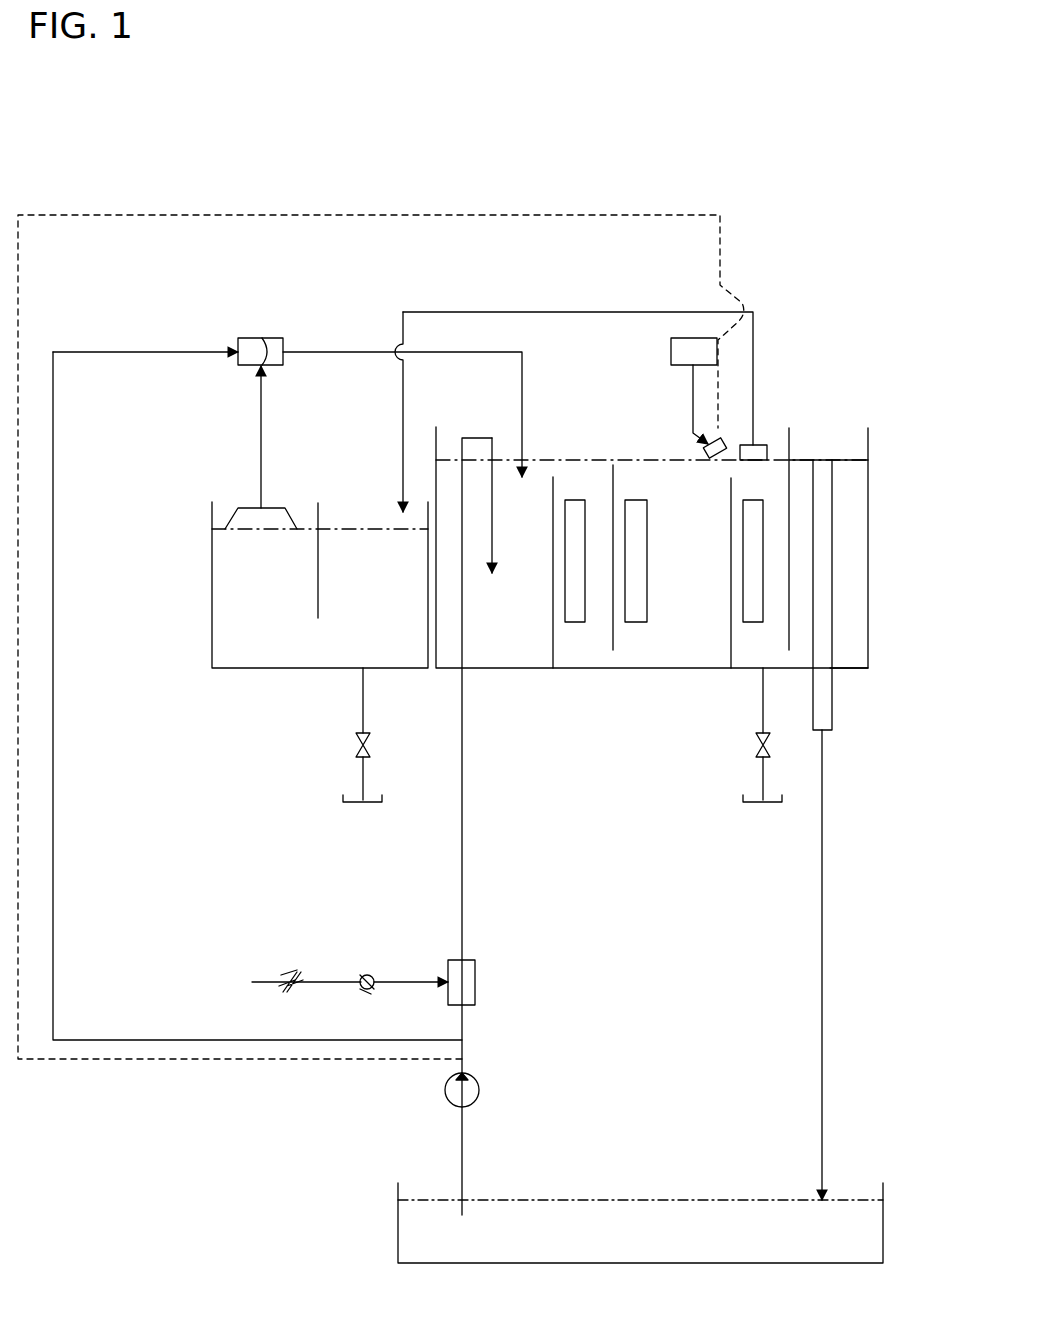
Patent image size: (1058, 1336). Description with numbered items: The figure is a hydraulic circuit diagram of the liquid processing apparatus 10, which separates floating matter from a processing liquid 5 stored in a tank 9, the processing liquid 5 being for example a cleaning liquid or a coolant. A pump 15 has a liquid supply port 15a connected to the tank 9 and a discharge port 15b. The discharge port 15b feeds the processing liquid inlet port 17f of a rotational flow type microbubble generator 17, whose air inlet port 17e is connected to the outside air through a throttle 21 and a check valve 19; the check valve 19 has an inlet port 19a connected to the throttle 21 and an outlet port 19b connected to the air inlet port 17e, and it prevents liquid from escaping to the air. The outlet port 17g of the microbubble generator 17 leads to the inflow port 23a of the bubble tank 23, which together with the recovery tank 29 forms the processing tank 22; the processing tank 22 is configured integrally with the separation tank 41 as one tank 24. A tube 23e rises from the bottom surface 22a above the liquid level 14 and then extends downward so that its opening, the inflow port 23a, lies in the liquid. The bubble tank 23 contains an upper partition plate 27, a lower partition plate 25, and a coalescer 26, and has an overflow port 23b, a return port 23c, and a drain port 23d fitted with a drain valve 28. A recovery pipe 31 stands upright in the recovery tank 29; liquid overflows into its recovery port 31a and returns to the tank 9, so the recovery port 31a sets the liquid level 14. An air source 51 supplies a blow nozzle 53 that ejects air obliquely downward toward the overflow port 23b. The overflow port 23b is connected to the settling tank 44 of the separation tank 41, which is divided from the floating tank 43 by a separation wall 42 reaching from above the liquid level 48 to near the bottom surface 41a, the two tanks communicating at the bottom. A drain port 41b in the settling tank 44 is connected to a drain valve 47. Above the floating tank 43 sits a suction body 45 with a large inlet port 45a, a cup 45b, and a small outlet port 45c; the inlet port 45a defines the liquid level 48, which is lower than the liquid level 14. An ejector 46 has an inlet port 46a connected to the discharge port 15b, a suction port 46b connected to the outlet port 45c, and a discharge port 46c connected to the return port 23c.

The processing liquid 5 is at (640, 1216).
The tank 9 is at (396, 1220).
The liquid processing apparatus 10 is at (822, 178).
The liquid level 14 is at (553, 458).
The pump 15 is at (562, 1058).
The liquid supply port 15a is at (468, 1104).
The discharge port 15b is at (468, 1078).
The microbubble generator 17 is at (562, 940).
The air inlet port 17e is at (445, 1000).
The processing liquid inlet port 17f is at (470, 1010).
The outlet port 17g is at (476, 968).
The check valve 19 is at (340, 906).
The inlet port 19a is at (340, 978).
The outlet port 19b is at (400, 978).
The throttle 21 is at (282, 980).
The processing tank 22 is at (853, 358).
The bottom surface 22a is at (852, 680).
The bubble tank 23 is at (436, 458).
The inflow port 23a is at (492, 578).
The overflow port 23b is at (760, 455).
The return port 23c is at (520, 470).
The drain port 23d is at (760, 672).
The tube 23e is at (495, 496).
The tank 24 is at (822, 266).
The lower partition plate 25 is at (550, 645).
The coalescer 26 is at (575, 625).
The upper partition plate 27 is at (614, 478).
The drain valve 28 is at (758, 746).
The recovery tank 29 is at (870, 470).
The recovery pipe 31 is at (834, 508).
The recovery port 31a is at (826, 460).
The separation tank 41 is at (296, 448).
The bottom surface 41a is at (233, 670).
The drain port 41b is at (360, 672).
The separation wall 42 is at (320, 520).
The floating tank 43 is at (222, 640).
The settling tank 44 is at (416, 670).
The suction body 45 is at (143, 440).
The inlet port 45a is at (225, 540).
The cup 45b is at (230, 520).
The outlet port 45c is at (258, 503).
The ejector 46 is at (178, 290).
The inlet port 46a is at (238, 348).
The suction port 46b is at (262, 338).
The discharge port 46c is at (285, 348).
The drain valve 47 is at (370, 746).
The liquid level 48 is at (376, 525).
The air source 51 is at (670, 358).
The blow nozzle 53 is at (722, 440).